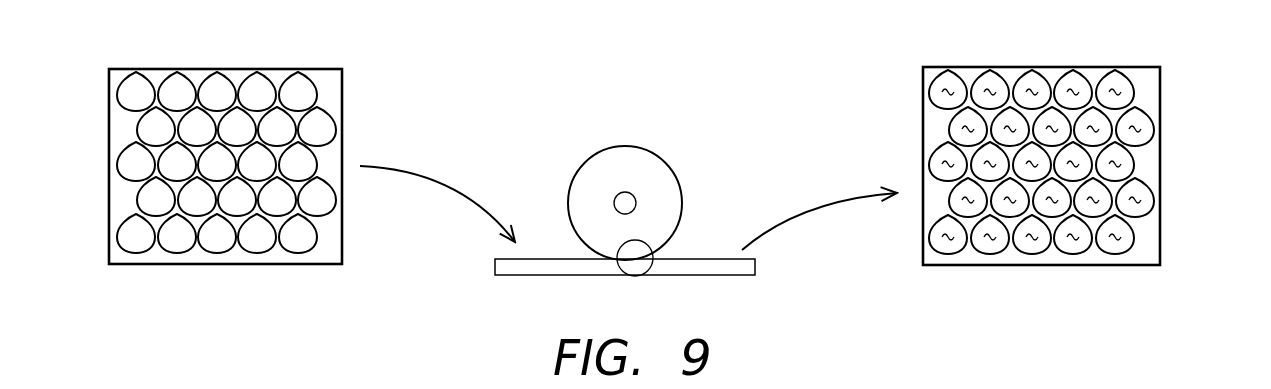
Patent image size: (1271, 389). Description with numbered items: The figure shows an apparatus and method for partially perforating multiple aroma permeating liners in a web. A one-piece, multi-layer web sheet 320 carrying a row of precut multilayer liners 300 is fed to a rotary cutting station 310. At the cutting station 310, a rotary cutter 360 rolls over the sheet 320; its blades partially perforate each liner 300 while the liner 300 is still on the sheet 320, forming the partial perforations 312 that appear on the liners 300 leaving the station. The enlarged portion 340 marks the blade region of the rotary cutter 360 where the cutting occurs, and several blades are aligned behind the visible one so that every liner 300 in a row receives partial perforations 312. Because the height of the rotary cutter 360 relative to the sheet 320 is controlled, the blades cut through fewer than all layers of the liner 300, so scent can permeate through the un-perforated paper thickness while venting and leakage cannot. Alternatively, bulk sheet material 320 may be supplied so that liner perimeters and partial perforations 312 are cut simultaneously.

The multilayer liner 300 is at (1093, 138).
The rotary cutting station 310 is at (420, 78).
The partial perforations 312 is at (1113, 92).
The multi-layer web sheet 320 is at (212, 263).
The enlarged portion 340 is at (633, 250).
The rotary cutter 360 is at (588, 158).